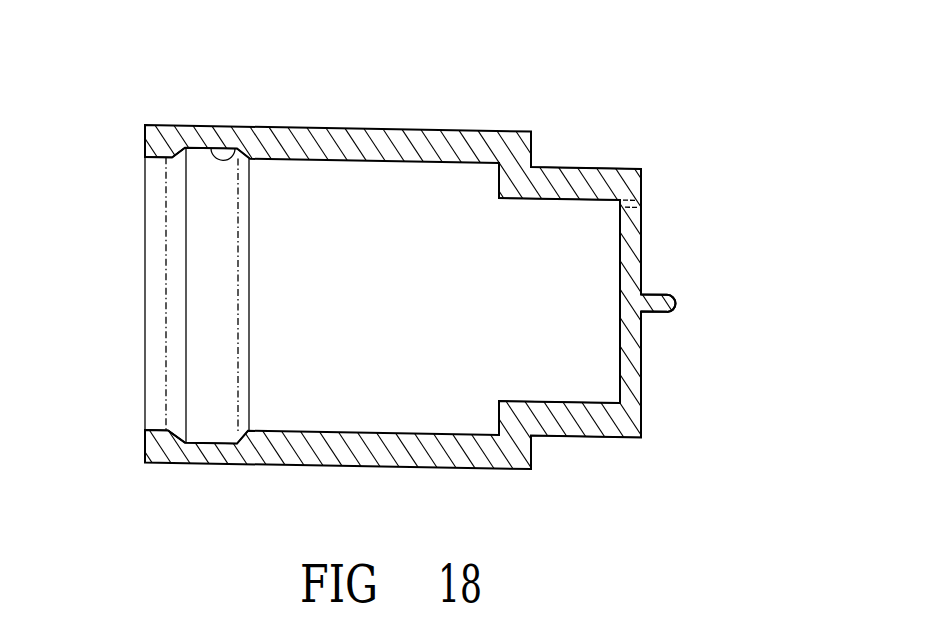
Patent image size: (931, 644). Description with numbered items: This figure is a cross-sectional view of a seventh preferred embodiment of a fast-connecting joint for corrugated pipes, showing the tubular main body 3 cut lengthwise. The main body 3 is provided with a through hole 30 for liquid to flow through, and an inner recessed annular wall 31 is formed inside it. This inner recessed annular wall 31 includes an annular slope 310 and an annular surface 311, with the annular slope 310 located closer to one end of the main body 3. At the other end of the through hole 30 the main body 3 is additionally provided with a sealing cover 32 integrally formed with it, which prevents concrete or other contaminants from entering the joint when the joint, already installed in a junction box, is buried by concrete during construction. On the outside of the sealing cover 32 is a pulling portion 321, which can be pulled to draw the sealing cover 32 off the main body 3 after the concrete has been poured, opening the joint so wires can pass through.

The main body 3 is at (437, 250).
The through hole 30 is at (150, 370).
The inner recessed annular wall 31 is at (184, 125).
The annular slope 310 is at (176, 158).
The annular surface 311 is at (270, 125).
The sealing cover 32 is at (643, 370).
The pulling portion 321 is at (667, 303).